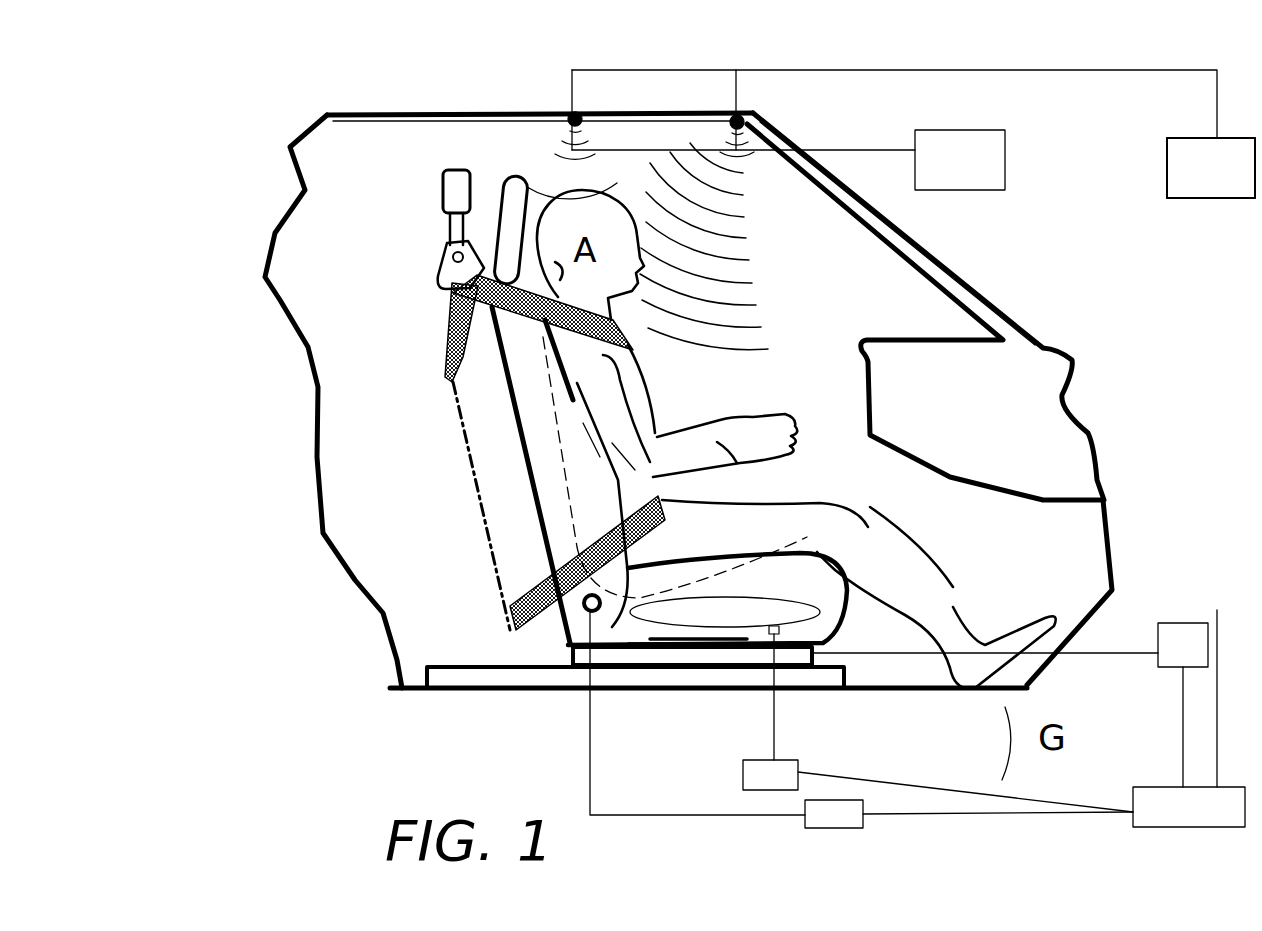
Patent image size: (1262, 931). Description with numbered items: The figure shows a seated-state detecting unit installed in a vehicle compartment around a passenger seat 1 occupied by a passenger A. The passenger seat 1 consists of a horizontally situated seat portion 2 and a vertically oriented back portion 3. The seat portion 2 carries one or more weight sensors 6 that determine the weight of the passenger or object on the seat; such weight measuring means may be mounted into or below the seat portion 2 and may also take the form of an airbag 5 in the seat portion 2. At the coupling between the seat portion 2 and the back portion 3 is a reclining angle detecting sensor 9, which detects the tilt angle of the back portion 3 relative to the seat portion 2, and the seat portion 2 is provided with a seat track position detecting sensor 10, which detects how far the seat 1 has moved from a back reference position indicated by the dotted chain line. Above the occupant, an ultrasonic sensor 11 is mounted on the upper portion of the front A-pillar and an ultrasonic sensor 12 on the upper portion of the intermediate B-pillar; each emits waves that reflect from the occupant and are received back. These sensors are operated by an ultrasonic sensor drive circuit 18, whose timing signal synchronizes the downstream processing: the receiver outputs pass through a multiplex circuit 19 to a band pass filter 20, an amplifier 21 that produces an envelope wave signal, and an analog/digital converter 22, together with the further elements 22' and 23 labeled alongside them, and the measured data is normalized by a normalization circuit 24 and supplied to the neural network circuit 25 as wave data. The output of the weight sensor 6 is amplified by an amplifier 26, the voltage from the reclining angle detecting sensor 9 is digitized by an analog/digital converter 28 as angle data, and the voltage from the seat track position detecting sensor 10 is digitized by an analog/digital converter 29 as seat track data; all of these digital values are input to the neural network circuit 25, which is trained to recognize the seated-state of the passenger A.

The passenger seat 1 is at (505, 412).
The seat portion 2 is at (820, 570).
The back portion 3 is at (552, 483).
The airbag 5 is at (775, 648).
The weight sensor 6 is at (677, 617).
The reclining angle detecting sensor 9 is at (583, 615).
The seat track position detecting sensor 10 is at (660, 653).
The ultrasonic sensor 11 is at (573, 116).
The ultrasonic sensor 12 is at (737, 120).
The ultrasonic sensor drive circuit 18 is at (788, 160).
The multiplex circuit 19 is at (1187, 170).
The band pass filter 20 is at (1211, 168).
The amplifier 21 is at (1211, 168).
The analog/digital converter 22 is at (1211, 168).
The additional sensor 22' is at (1211, 168).
The additional sensor 23 is at (1211, 168).
The normalization circuit 24 is at (1211, 168).
The neural network circuit 25 is at (1189, 807).
The amplifier 26 is at (938, 719).
The analog/digital converter 28 is at (861, 721).
The analog/digital converter 29 is at (1010, 705).